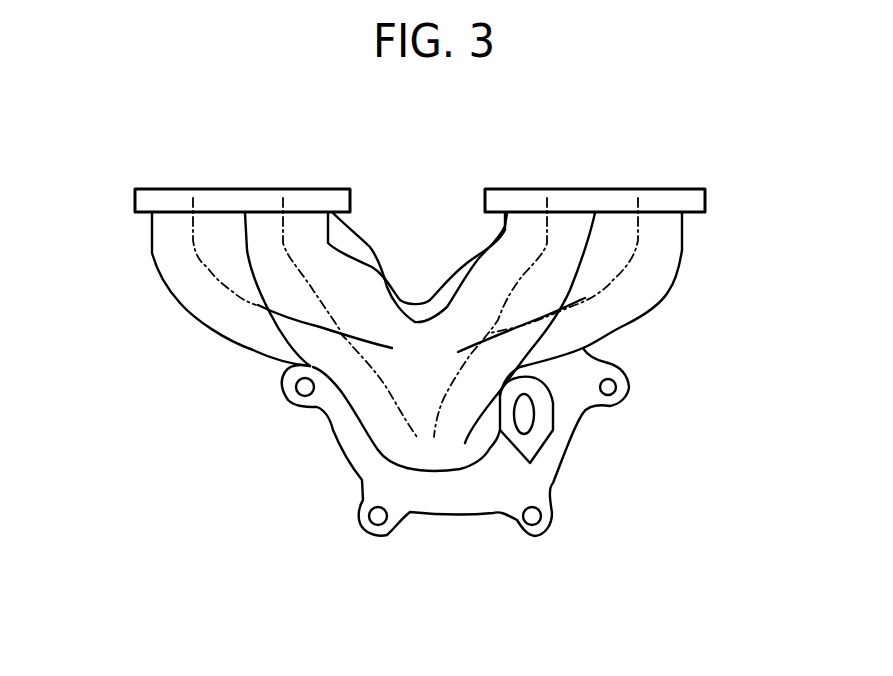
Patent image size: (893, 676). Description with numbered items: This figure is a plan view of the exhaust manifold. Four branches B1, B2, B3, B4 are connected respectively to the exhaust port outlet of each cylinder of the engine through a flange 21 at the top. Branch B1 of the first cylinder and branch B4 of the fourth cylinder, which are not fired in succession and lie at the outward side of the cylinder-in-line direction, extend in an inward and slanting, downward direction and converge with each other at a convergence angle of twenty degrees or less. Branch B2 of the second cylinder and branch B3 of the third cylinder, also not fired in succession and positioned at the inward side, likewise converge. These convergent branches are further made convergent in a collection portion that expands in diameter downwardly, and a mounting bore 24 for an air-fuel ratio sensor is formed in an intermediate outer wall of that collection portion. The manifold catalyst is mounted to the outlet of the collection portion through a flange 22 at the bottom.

The flange 21 is at (135, 202).
The flange 22 is at (463, 515).
The mounting bore 24 is at (525, 420).
The branch B1 is at (203, 323).
The branch B2 is at (283, 338).
The branch B3 is at (563, 320).
The branch B4 is at (663, 297).